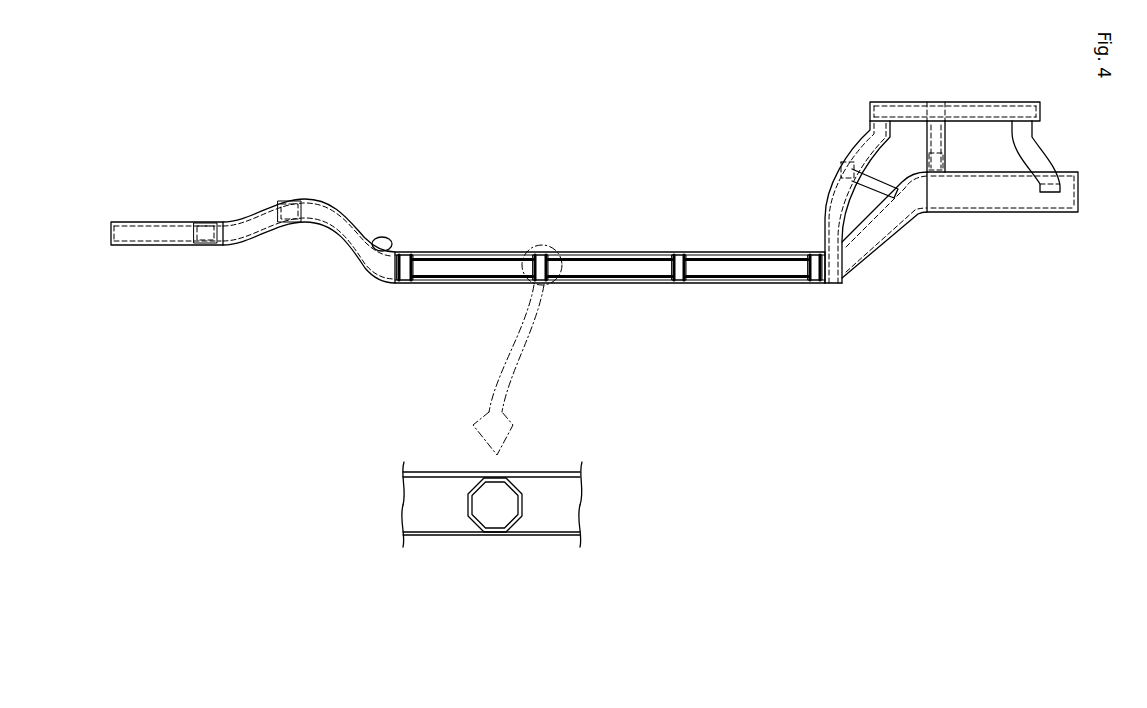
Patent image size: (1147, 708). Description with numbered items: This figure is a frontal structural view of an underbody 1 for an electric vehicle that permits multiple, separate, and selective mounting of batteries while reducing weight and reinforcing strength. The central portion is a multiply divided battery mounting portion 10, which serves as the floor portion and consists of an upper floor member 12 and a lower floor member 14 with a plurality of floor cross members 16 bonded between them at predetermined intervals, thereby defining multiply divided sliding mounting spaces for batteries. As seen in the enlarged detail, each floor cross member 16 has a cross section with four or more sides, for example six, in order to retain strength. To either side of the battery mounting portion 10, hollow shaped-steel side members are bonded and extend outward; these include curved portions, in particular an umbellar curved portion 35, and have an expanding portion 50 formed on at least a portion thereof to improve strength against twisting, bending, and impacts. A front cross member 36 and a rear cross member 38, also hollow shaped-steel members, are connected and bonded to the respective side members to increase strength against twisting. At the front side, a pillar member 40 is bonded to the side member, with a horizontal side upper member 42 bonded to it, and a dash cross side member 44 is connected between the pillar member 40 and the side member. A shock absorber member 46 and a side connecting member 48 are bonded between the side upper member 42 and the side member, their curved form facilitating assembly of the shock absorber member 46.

The underbody 1 is at (586, 86).
The multiply divided battery mounting portion 10 is at (610, 427).
The upper floor member 12 is at (615, 254).
The lower floor member 14 is at (656, 285).
The floor cross member 16 is at (403, 284).
The umbellar curved portion 35 is at (327, 205).
The front cross member 36 is at (935, 151).
The rear cross member 38 is at (207, 225).
The pillar member 40 is at (832, 195).
The side upper member 42 is at (895, 102).
The dash cross side member 44 is at (872, 177).
The shock absorber member 46 is at (947, 137).
The side connecting member 48 is at (1028, 138).
The expanding portion 50 is at (371, 257).